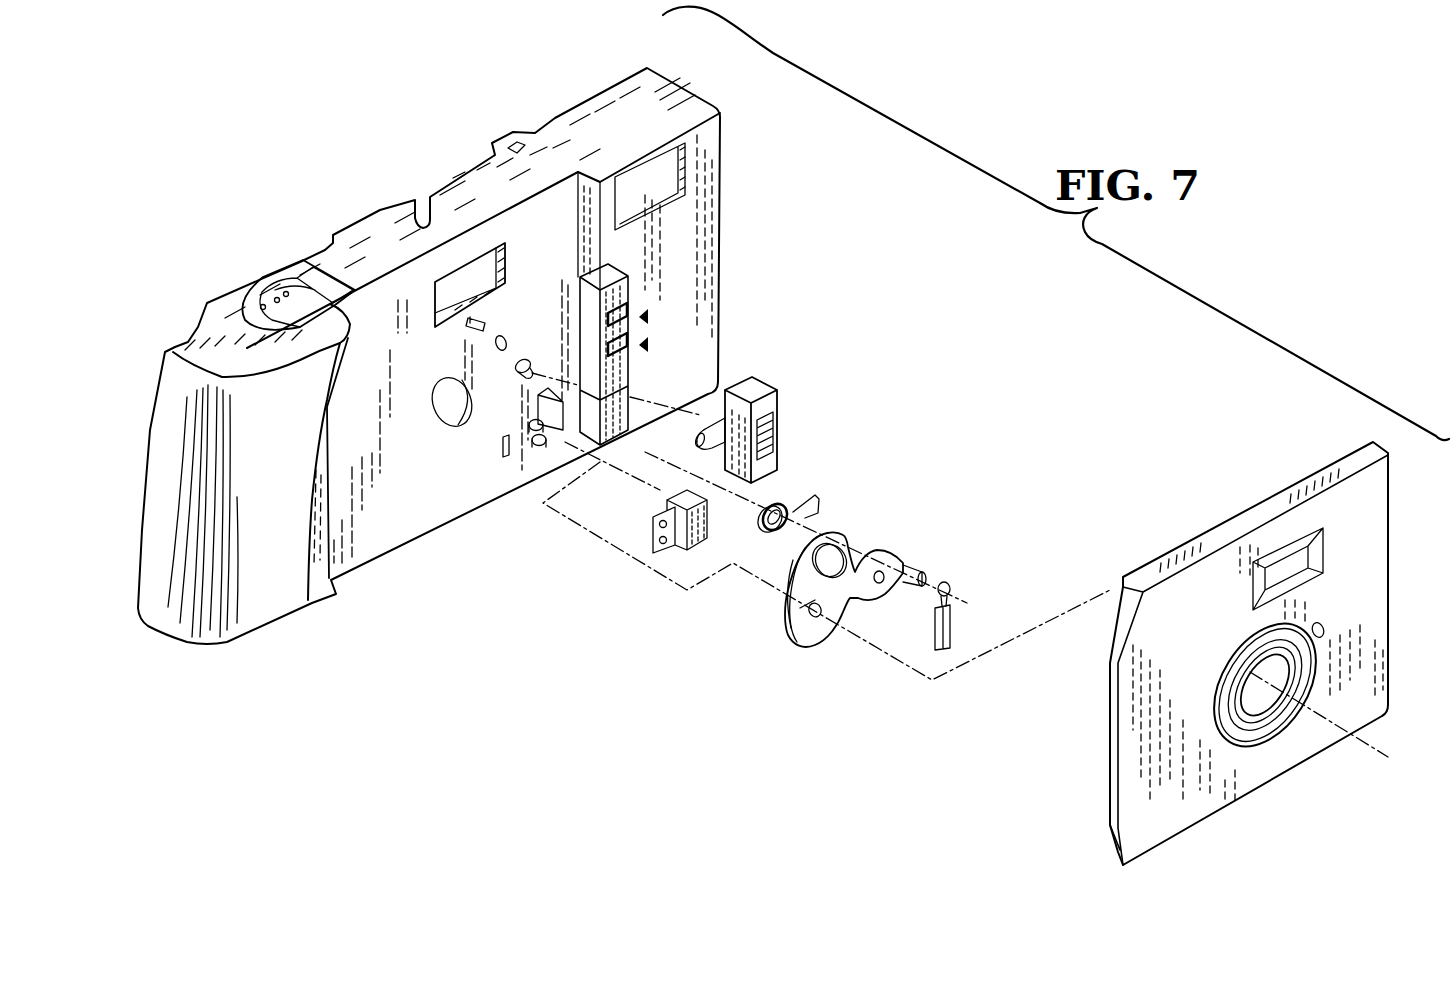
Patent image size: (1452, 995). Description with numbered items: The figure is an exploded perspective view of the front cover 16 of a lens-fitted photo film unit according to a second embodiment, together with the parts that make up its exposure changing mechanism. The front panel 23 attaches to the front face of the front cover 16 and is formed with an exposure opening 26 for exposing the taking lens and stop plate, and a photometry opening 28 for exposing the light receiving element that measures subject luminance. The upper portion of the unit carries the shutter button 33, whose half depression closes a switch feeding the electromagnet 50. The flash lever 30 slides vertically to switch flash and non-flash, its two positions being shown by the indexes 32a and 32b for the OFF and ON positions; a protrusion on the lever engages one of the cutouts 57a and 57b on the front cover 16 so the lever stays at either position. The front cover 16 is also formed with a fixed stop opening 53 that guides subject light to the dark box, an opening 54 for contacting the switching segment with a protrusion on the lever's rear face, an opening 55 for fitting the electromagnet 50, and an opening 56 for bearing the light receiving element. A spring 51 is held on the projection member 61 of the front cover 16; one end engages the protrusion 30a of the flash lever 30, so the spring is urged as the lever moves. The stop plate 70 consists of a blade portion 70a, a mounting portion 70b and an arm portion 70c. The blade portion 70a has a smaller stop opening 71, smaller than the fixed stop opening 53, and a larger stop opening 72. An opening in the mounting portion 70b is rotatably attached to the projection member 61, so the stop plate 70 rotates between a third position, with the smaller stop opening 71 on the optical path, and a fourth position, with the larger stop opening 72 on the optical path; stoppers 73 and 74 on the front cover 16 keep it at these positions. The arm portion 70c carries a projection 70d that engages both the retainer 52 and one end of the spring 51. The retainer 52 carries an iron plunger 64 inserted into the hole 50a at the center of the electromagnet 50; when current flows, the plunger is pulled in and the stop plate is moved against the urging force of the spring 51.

The front cover 16 is at (708, 158).
The front panel 23 is at (1140, 752).
The exposure opening 26 is at (1272, 710).
The photometry opening 28 is at (1322, 623).
The flash lever 30 is at (795, 425).
The protrusion 30a is at (765, 402).
The index 32a is at (685, 318).
The index 32b is at (675, 300).
The shutter button 33 is at (265, 295).
The electromagnet 50 is at (620, 554).
The hole 50a is at (662, 503).
The spring 51 is at (767, 505).
The retainer 52 is at (950, 587).
The fixed stop opening 53 is at (450, 430).
The opening 54 is at (580, 335).
The opening 55 is at (540, 438).
The opening 56 is at (498, 333).
The cutout 57a is at (632, 350).
The cutout 57b is at (638, 293).
The projection member 61 is at (525, 360).
The iron plunger 64 is at (953, 630).
The stop plate 70 is at (868, 604).
The blade portion 70a is at (808, 637).
The mounting portion 70b is at (888, 547).
The arm portion 70c is at (905, 560).
The projection 70d is at (927, 570).
The smaller stop opening 71 is at (807, 613).
The larger stop opening 72 is at (800, 565).
The stopper 73 is at (473, 315).
The stopper 74 is at (505, 457).